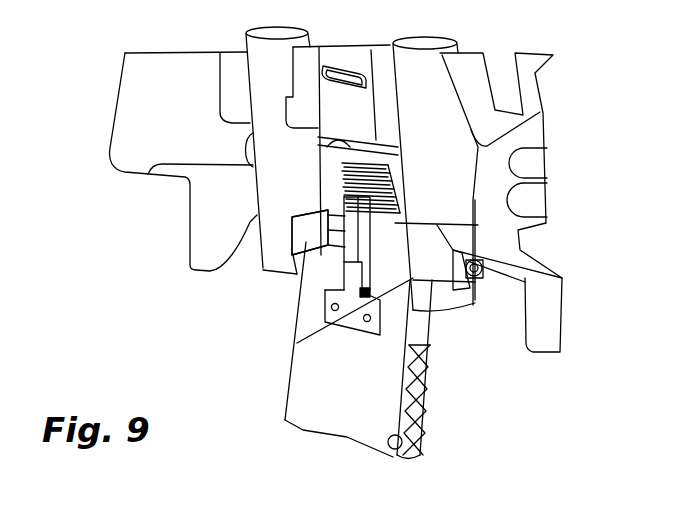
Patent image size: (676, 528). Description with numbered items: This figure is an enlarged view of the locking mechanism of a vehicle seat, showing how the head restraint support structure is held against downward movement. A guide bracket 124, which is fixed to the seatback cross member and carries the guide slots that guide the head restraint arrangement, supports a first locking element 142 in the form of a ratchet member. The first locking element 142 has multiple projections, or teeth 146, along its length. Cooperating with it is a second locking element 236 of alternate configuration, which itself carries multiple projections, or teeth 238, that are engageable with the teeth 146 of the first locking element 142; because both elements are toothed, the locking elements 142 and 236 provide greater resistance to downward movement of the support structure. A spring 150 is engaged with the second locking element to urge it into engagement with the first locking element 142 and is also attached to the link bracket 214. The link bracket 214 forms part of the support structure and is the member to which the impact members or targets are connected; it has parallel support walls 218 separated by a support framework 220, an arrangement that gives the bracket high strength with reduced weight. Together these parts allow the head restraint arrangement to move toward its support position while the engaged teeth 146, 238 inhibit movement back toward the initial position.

The guide bracket 124 is at (317, 137).
The first locking element 142 is at (314, 205).
The teeth 146 is at (314, 205).
The second locking element 236 is at (358, 232).
The spring 150 is at (345, 313).
The link bracket 214 is at (300, 404).
The support walls 218 is at (425, 397).
The support framework 220 is at (423, 417).
The teeth 238 is at (505, 229).